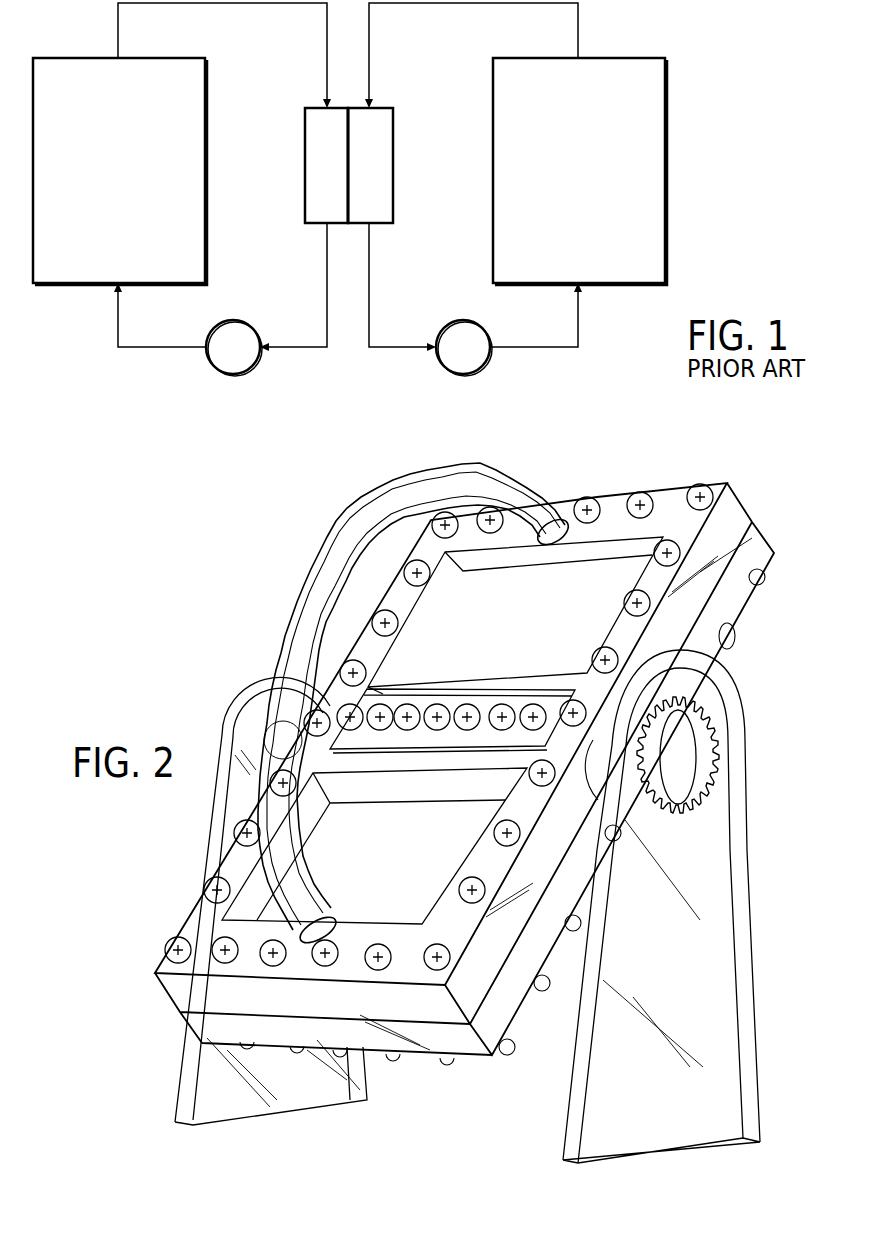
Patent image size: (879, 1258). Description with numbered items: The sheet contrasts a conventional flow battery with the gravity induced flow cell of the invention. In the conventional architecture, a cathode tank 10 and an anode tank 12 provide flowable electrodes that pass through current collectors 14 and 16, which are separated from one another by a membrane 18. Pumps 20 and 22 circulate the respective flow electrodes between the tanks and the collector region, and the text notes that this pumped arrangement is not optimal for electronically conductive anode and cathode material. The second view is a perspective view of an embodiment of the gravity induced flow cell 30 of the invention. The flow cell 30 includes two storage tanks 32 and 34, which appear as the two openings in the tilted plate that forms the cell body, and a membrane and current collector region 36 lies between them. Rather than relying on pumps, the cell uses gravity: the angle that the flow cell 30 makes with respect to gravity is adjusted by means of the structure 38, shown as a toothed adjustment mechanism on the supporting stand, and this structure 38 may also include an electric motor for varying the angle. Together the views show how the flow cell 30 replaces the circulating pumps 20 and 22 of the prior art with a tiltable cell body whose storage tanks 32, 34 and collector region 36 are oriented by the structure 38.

In FIG. 1, the cathode tank 10 is at (128, 208).
In FIG. 1, the anode tank 12 is at (588, 208).
In FIG. 1, the current collector 14 is at (306, 127).
In FIG. 1, the current collector 16 is at (393, 126).
In FIG. 1, the membrane 18 is at (349, 224).
In FIG. 1, the pump 20 is at (234, 330).
In FIG. 1, the pump 22 is at (481, 340).
In FIG. 2, the gravity induced flow cell 30 is at (736, 641).
In FIG. 2, the storage tank 32 is at (500, 627).
In FIG. 2, the storage tank 34 is at (376, 864).
In FIG. 2, the membrane and current collector region 36 is at (443, 700).
In FIG. 2, the structure 38 is at (722, 753).